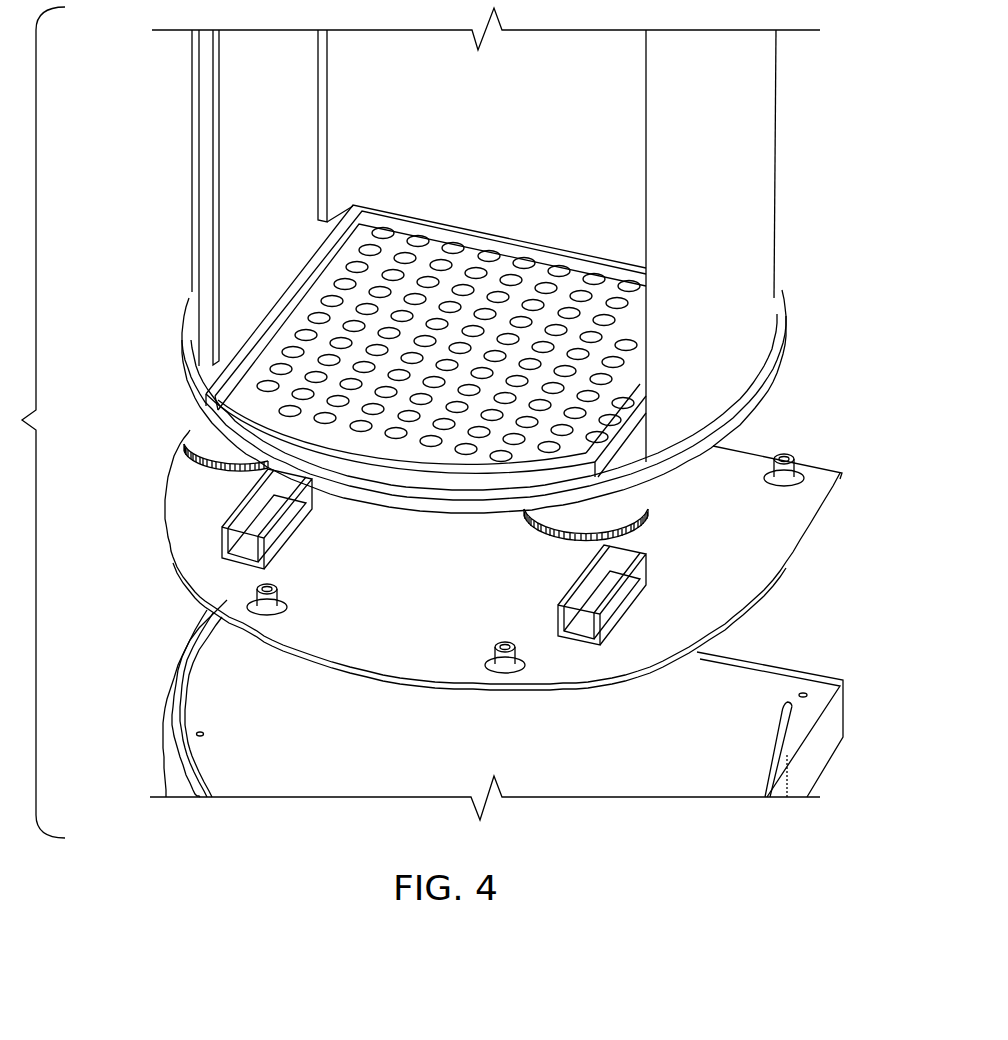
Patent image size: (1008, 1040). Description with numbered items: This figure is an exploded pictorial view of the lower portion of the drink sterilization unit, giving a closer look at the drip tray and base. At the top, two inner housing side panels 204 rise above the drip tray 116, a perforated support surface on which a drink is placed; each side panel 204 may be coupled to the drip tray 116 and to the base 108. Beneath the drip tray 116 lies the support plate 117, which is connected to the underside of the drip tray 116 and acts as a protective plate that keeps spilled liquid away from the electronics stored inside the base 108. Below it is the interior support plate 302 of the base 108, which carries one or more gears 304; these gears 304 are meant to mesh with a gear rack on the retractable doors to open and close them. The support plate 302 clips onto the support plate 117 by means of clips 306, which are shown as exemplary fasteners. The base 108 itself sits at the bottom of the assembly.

The base 108 is at (180, 771).
The drip tray 116 is at (442, 232).
The support plate 117 is at (770, 406).
The inner housing side panel 204 is at (192, 77).
The support plate 302 is at (775, 545).
The gears 304 is at (200, 427).
The clips 306 is at (613, 600).